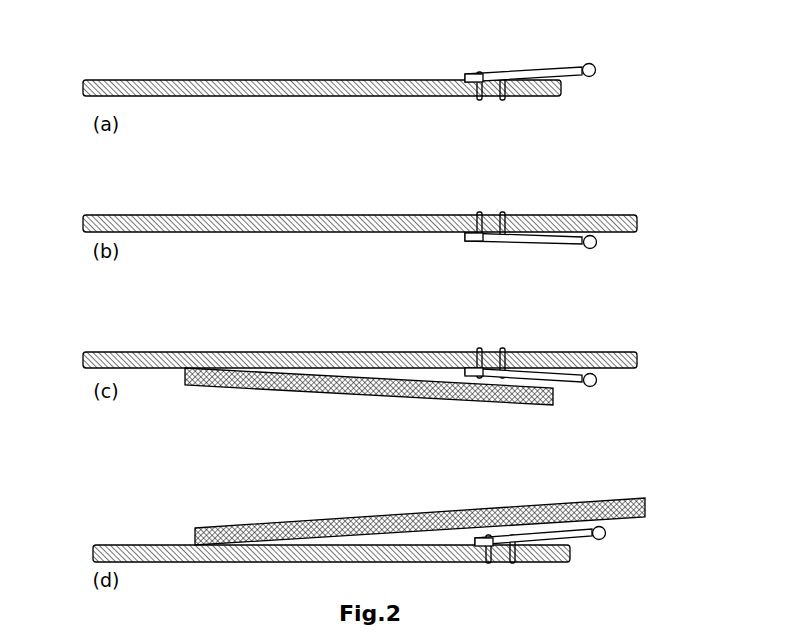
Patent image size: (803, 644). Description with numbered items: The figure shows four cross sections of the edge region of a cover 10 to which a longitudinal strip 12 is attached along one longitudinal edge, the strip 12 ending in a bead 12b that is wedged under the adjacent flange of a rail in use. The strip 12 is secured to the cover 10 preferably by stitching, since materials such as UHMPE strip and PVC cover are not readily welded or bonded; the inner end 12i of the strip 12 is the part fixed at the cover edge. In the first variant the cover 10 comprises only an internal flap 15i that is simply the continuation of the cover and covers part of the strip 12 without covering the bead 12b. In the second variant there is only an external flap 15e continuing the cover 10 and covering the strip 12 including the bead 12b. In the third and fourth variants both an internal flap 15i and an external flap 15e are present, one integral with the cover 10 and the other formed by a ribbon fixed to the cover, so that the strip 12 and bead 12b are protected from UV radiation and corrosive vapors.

The cover 10 is at (124, 73).
The longitudinal strip 12 is at (572, 80).
The bead 12b is at (597, 75).
The inner end of lever 12i is at (466, 73).
The internal flap 15i is at (530, 96).
The external flap 15e is at (570, 214).